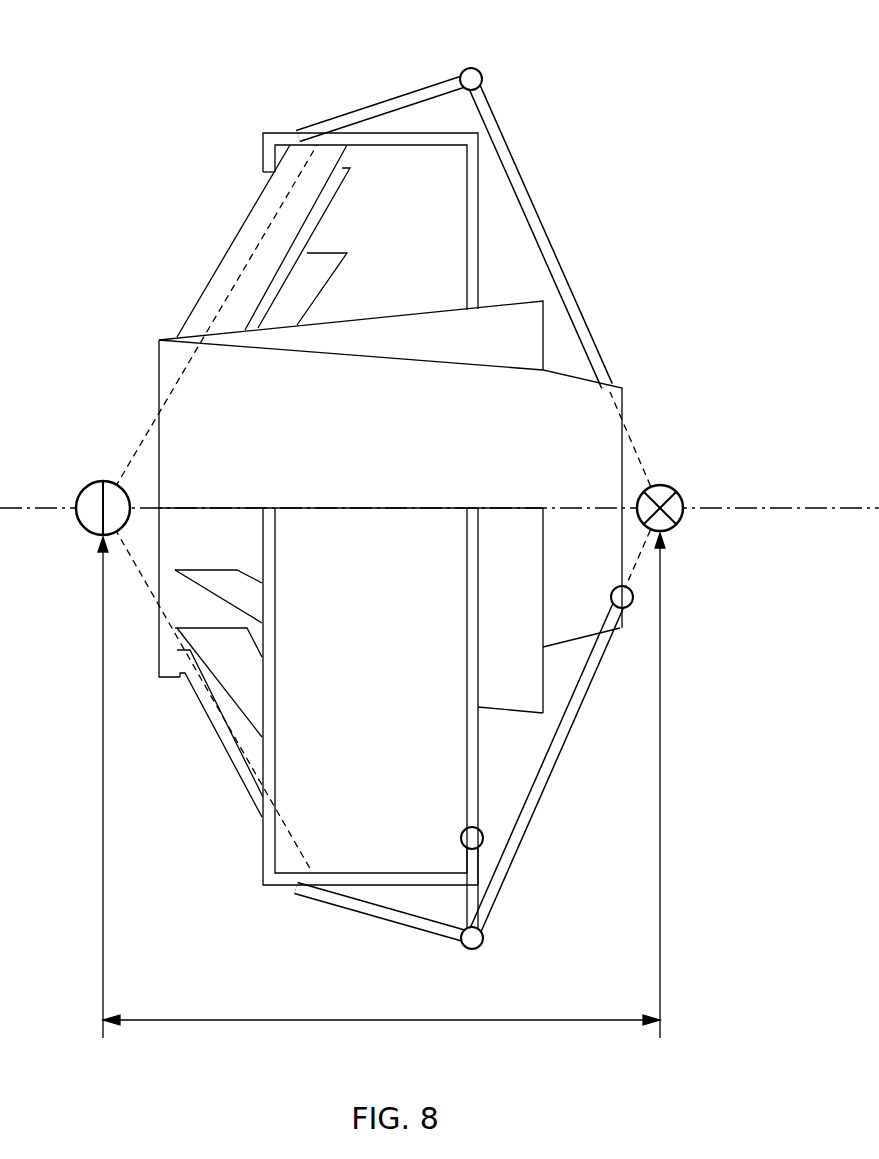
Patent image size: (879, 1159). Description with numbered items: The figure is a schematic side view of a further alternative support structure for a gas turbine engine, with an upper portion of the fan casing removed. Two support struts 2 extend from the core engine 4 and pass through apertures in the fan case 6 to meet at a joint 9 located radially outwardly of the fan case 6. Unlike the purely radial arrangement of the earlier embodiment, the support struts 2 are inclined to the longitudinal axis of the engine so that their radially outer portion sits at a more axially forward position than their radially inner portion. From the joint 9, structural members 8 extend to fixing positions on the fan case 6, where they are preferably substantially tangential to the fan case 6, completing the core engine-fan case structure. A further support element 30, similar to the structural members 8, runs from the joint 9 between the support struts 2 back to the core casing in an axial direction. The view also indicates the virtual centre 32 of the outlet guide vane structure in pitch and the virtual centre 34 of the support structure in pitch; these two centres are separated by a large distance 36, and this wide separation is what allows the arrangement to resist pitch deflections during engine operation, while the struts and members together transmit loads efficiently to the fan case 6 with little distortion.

The support strut 2 is at (490, 120).
The core engine 4 is at (598, 437).
The fan case 6 is at (263, 850).
The structural member 8 is at (468, 890).
The joint 9 is at (468, 66).
The support element 30 is at (370, 910).
The virtual centre of the OGV structure in pitch 32 is at (98, 497).
The virtual centre of the support structure in pitch 34 is at (672, 528).
The distance 36 is at (384, 1022).